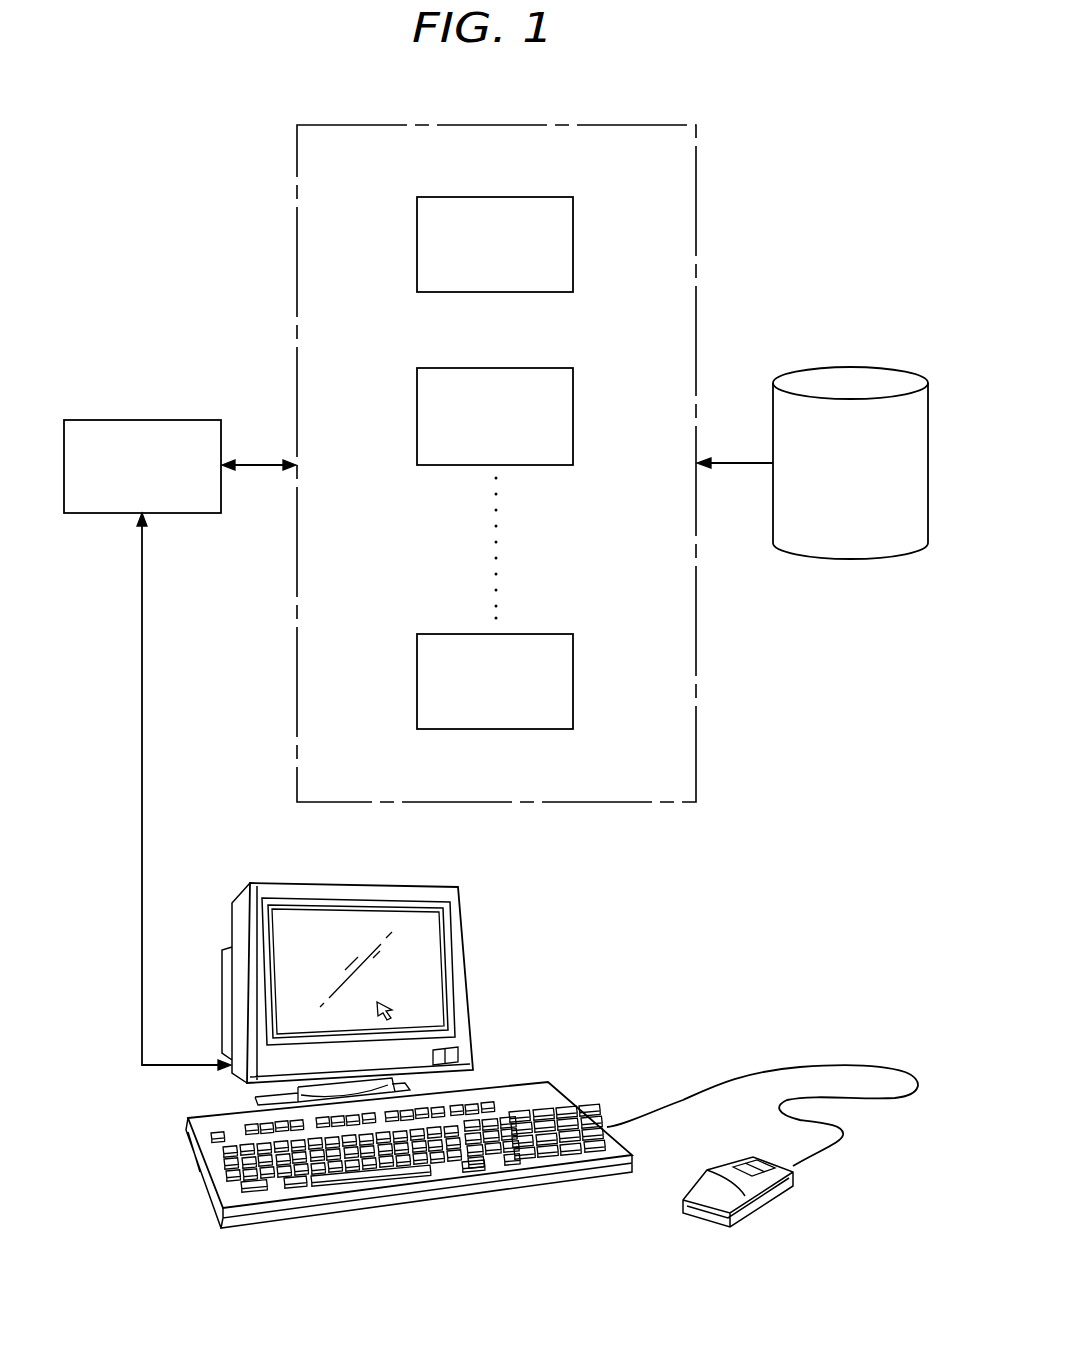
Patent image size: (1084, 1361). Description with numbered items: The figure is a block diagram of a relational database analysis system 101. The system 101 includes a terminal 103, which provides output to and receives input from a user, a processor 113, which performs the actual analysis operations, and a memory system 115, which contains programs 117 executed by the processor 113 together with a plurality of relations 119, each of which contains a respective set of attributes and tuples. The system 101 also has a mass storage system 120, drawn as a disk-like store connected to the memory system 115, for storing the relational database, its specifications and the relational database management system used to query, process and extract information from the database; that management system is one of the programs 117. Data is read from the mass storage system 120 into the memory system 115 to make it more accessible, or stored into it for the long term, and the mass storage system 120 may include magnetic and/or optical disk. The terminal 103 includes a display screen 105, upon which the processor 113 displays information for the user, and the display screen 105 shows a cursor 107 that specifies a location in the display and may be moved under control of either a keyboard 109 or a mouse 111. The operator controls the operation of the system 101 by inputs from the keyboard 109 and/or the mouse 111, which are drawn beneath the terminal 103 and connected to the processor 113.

The relational database analysis system 101 is at (160, 205).
The terminal 103 is at (467, 917).
The display screen 105 is at (422, 952).
The cursor 107 is at (393, 1010).
The keyboard 109 is at (553, 1093).
The mouse 111 is at (760, 1201).
The processor 113 is at (145, 420).
The memory system 115 is at (557, 125).
The programs 117 is at (563, 215).
The relations 119 is at (563, 395).
The mass storage system 120 is at (882, 373).